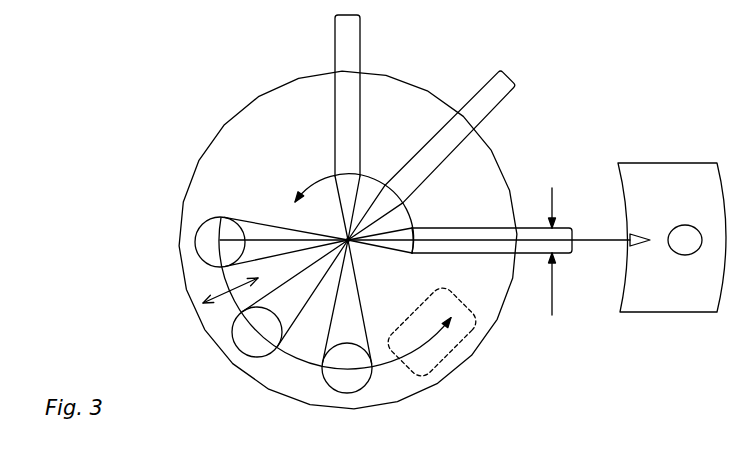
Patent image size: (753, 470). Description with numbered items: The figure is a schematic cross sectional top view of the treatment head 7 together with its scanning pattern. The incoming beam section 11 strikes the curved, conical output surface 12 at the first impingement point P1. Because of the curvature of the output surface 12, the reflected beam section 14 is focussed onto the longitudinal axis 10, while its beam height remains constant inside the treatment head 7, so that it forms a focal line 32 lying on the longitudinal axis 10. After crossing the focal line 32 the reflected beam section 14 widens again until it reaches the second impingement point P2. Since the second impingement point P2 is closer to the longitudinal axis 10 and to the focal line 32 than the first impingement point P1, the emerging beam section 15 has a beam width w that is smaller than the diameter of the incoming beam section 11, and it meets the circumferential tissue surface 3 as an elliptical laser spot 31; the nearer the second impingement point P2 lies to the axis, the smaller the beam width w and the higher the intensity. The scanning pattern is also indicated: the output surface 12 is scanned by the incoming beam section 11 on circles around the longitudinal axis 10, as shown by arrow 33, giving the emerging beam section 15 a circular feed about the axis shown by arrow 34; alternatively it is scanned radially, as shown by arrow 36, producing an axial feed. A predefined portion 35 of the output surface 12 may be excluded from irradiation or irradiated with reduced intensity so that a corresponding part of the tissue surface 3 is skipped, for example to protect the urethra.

The circumferential tissue surface 3 is at (672, 289).
The treatment head 7 is at (220, 123).
The longitudinal axis 10 is at (338, 232).
The incoming beam section 11 is at (211, 253).
The output surface 12 is at (271, 129).
The reflected beam section 14 is at (268, 230).
The emerging beam section 15 is at (524, 232).
The elliptical laser spot 31 is at (685, 233).
The focal line 32 is at (352, 245).
The arrow 33 is at (378, 362).
The arrow 34 is at (368, 178).
The predefined portion 35 is at (457, 358).
The arrow 36 is at (228, 292).
The first impingement point P1 is at (212, 238).
The second impingement point P2 is at (412, 228).
The beam width w is at (552, 293).